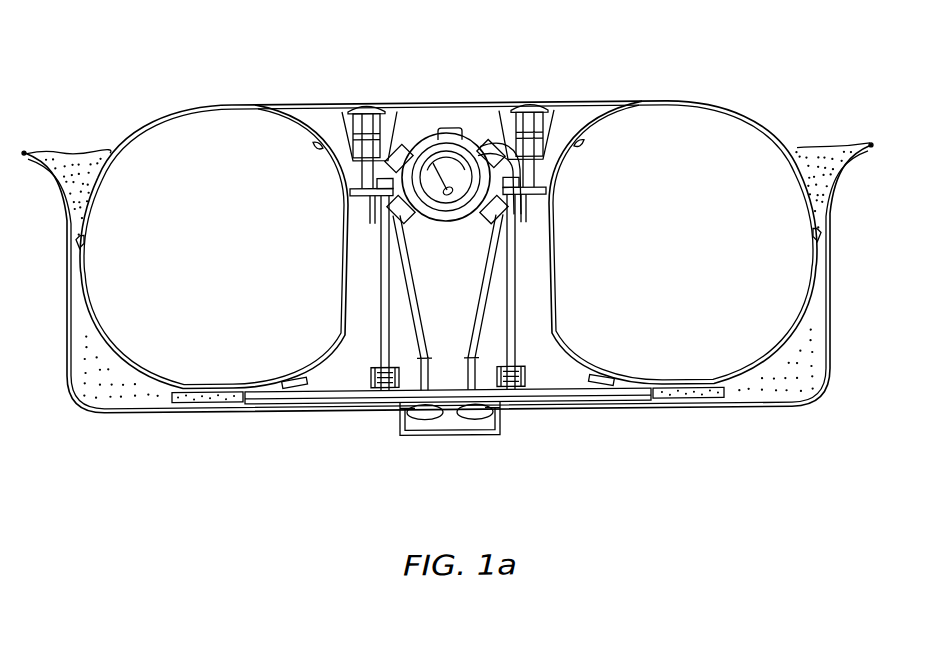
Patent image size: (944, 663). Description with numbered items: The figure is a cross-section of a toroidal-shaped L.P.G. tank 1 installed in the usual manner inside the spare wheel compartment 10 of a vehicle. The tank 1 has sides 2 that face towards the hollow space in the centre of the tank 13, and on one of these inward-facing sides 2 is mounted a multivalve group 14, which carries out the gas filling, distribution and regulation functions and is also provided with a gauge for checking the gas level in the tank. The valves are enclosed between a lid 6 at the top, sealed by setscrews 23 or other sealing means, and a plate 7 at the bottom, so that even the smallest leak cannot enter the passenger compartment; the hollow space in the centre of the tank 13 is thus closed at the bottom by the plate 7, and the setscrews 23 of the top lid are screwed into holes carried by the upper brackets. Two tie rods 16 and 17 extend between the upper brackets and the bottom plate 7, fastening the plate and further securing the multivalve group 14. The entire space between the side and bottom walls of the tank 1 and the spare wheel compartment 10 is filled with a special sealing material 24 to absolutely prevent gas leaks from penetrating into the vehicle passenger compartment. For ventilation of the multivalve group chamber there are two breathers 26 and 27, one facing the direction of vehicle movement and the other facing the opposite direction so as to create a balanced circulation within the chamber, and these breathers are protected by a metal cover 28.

The toroidal-shaped tank 1 is at (792, 142).
The sides 2 is at (563, 378).
The lid 6 is at (513, 107).
The plate 7 is at (600, 404).
The spare wheel compartment 10 is at (833, 344).
The hollow space in the centre of the tank 13 is at (490, 106).
The multivalve group 14 is at (460, 112).
The left rod 16 is at (380, 322).
The right rod 17 is at (520, 348).
The setscrews 23 is at (368, 104).
The sealing material 24 is at (82, 155).
The breather 26 is at (415, 415).
The breather 27 is at (482, 418).
The metal cover 28 is at (427, 437).